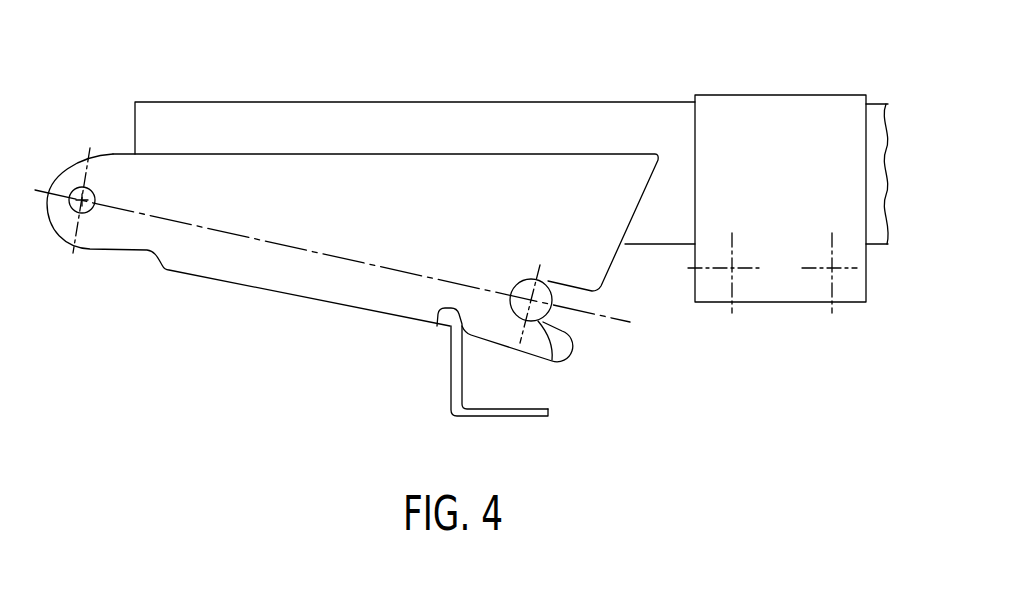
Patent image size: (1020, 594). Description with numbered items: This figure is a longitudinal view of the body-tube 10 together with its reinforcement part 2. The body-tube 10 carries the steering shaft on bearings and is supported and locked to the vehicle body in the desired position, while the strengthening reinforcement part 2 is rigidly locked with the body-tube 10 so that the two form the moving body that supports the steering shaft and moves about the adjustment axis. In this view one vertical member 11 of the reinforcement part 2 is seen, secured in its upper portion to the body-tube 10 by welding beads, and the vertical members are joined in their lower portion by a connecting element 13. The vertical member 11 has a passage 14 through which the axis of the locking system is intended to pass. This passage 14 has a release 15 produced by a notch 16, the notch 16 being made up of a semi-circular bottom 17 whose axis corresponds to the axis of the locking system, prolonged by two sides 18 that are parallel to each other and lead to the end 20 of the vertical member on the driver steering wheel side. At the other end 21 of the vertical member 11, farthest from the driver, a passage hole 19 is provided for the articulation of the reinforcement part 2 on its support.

The reinforcement part 2 is at (346, 183).
The body-tube 10 is at (575, 103).
The vertical member 11 is at (368, 222).
The connecting element 13 is at (263, 289).
The passage 14 is at (513, 320).
The release 15 is at (570, 318).
The notch 16 is at (553, 316).
The semi-circular bottom 17 is at (516, 290).
The sides 18 is at (567, 289).
The passage hole 19 is at (85, 214).
The end 20 is at (635, 224).
The other end 21 is at (79, 163).